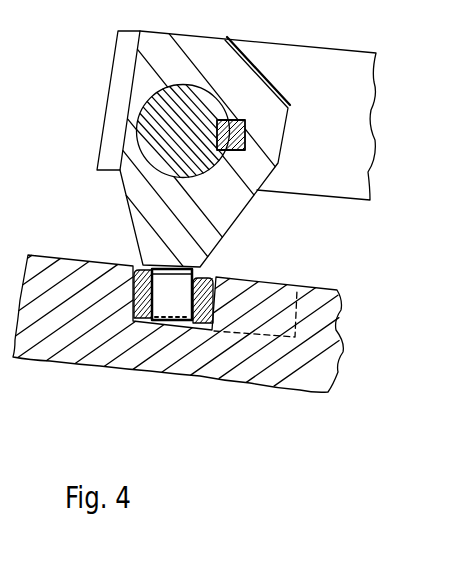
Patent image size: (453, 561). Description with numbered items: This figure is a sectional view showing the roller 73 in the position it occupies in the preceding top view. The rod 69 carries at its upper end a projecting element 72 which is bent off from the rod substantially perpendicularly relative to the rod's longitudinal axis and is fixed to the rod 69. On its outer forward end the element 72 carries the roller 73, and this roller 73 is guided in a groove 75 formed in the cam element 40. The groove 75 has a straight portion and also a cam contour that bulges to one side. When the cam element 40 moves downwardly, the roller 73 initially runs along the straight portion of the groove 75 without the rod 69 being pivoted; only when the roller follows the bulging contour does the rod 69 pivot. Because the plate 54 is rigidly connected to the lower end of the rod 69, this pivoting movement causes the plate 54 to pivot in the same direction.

The cam element 40 is at (327, 336).
The plate 54 is at (363, 106).
The rod 69 is at (217, 100).
The element 72 is at (240, 206).
The roller 73 is at (213, 277).
The groove 75 is at (133, 322).